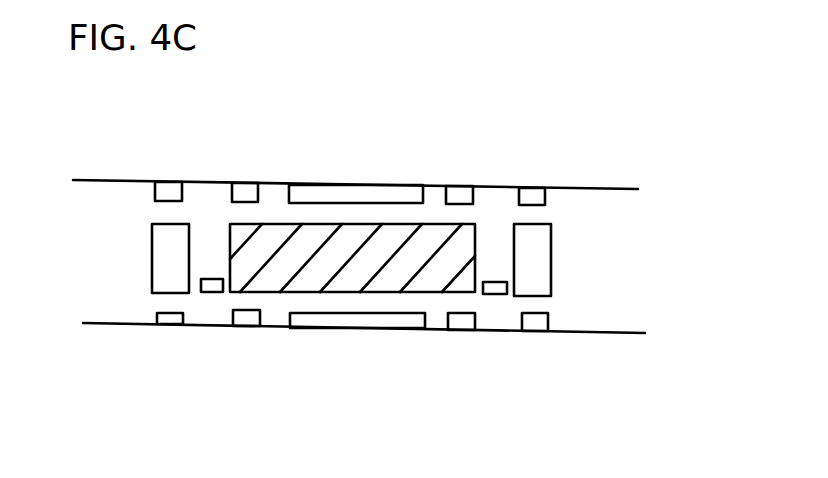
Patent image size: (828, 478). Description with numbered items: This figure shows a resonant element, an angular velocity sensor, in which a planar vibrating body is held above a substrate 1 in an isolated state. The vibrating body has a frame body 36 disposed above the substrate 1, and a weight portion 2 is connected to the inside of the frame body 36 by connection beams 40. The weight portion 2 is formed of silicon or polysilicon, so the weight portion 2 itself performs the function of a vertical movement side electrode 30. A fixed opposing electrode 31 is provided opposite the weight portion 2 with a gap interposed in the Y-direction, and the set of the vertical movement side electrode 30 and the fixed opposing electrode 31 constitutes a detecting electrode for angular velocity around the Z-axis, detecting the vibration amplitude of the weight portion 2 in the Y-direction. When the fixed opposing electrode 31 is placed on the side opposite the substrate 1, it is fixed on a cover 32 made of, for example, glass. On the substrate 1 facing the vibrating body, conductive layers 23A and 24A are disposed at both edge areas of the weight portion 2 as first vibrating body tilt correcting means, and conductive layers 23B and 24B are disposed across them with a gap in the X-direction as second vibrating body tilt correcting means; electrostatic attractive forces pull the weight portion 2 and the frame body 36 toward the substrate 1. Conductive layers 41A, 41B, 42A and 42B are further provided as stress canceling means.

The substrate 1 is at (600, 347).
The weight portion 2 is at (352, 206).
The vertical movement side electrode 30 is at (392, 240).
The fixed opposing electrode 31 is at (315, 193).
The cover 32 is at (618, 182).
The frame body 36 is at (170, 230).
The connection beams 40 is at (212, 283).
The conductive layer 41A is at (242, 193).
The conductive layer 41B is at (170, 188).
The conductive layer 42A is at (457, 197).
The conductive layer 42B is at (533, 198).
The conductive layer 23A is at (250, 320).
The conductive layer 23B is at (170, 325).
The conductive layer 24A is at (462, 328).
The conductive layer 24B is at (536, 330).